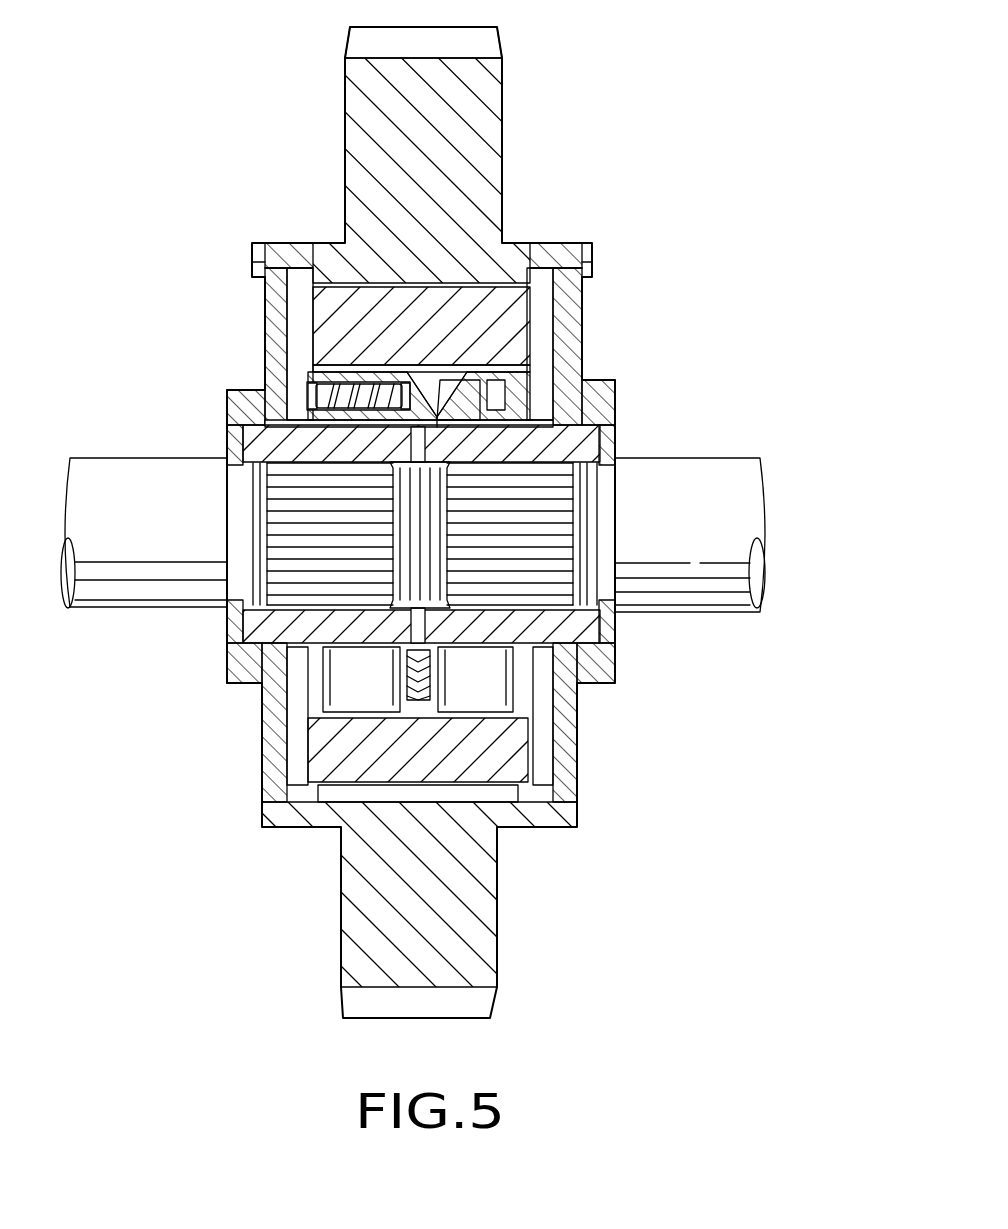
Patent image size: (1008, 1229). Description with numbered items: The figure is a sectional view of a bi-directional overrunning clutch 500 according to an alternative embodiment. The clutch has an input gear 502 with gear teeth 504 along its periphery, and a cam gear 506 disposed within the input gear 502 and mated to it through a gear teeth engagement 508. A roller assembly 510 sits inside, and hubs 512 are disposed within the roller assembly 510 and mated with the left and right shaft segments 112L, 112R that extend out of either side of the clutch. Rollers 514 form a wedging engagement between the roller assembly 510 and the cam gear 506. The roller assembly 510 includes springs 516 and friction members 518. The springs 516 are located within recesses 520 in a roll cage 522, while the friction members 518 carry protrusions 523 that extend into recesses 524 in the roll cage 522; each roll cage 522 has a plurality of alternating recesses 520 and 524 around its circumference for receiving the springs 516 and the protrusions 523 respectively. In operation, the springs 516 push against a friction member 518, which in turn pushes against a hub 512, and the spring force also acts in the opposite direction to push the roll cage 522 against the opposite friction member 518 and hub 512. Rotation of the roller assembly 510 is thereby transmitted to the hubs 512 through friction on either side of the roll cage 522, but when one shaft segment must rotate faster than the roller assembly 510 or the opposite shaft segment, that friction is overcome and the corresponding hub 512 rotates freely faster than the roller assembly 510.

The bi-directional overrunning clutch 500 is at (205, 124).
The input gear 502 is at (503, 107).
The gear teeth 504 is at (482, 50).
The cam gear 506 is at (512, 345).
The gear teeth engagement 508 is at (497, 280).
The roller assembly 510 is at (441, 366).
The hubs 512 is at (583, 668).
The rollers 514 is at (490, 690).
The springs 516 is at (307, 397).
The friction members 518 is at (297, 337).
The recesses 520 is at (367, 390).
The roll cage 522 is at (420, 387).
The protrusions 523 is at (532, 380).
The recesses 524 is at (455, 407).
The left shaft segment 112L is at (113, 478).
The right shaft segment 112R is at (732, 508).